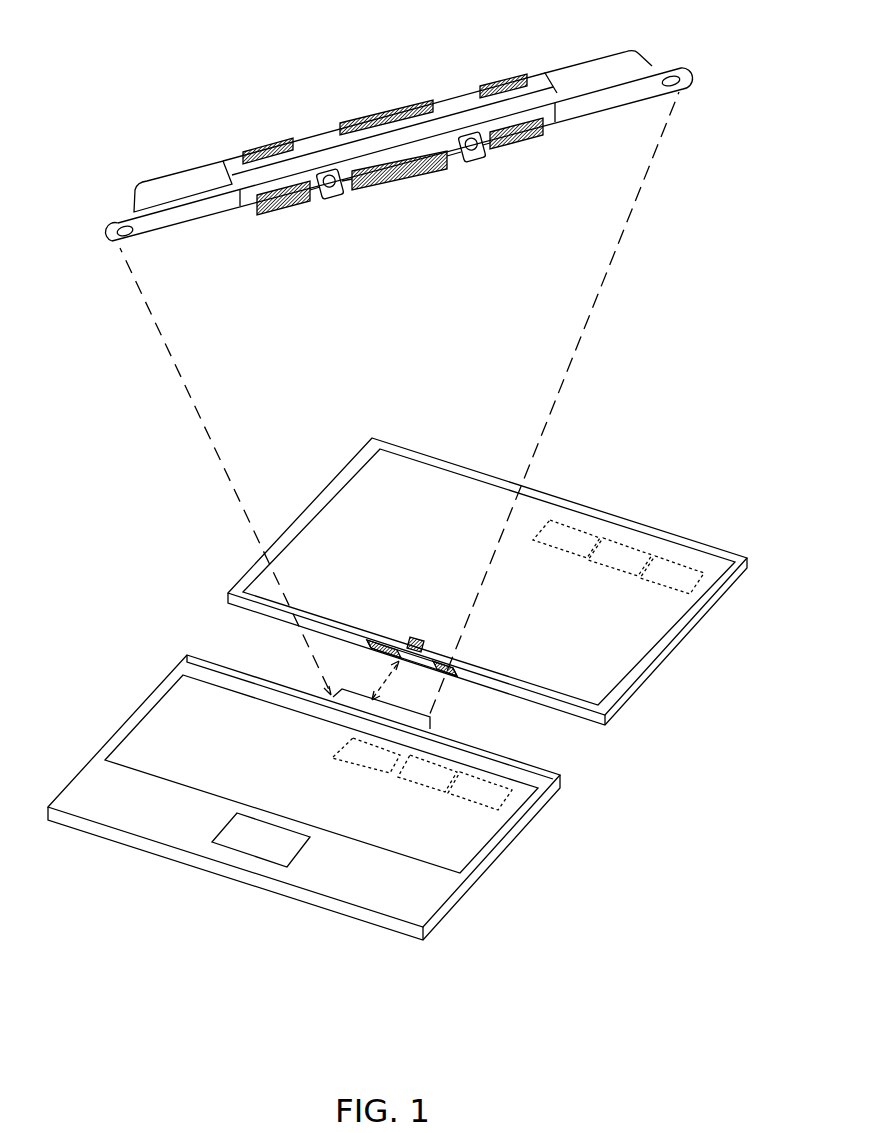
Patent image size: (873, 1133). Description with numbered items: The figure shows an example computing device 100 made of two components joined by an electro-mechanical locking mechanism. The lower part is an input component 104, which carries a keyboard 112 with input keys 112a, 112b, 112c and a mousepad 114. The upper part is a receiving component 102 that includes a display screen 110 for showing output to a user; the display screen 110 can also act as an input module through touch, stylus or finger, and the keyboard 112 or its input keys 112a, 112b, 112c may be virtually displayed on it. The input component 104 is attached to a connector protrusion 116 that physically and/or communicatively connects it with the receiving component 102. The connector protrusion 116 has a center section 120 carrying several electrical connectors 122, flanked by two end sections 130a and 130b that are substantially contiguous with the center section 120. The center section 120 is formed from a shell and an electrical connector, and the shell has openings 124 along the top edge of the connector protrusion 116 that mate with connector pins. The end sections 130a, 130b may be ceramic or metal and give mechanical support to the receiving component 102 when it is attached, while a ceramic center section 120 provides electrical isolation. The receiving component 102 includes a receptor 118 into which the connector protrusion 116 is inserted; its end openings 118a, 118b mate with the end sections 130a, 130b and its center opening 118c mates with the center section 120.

The computing device 100 is at (141, 82).
The receiving component 102 is at (623, 518).
The input component 104 is at (518, 836).
The display screen 110 is at (637, 623).
The keyboard 112 is at (477, 825).
The input key 112a is at (466, 646).
The input key 112b is at (525, 665).
The input key 112c is at (576, 683).
The mousepad 114 is at (262, 858).
The connector protrusion 116 is at (432, 722).
The receptor 118 is at (430, 648).
The end opening 118a is at (368, 645).
The end opening 118b is at (455, 676).
The center opening 118c is at (402, 643).
The center section 120 is at (307, 137).
The electrical connectors 122 is at (290, 198).
The openings 124 is at (407, 110).
The end section 130a is at (148, 182).
The end section 130b is at (636, 52).